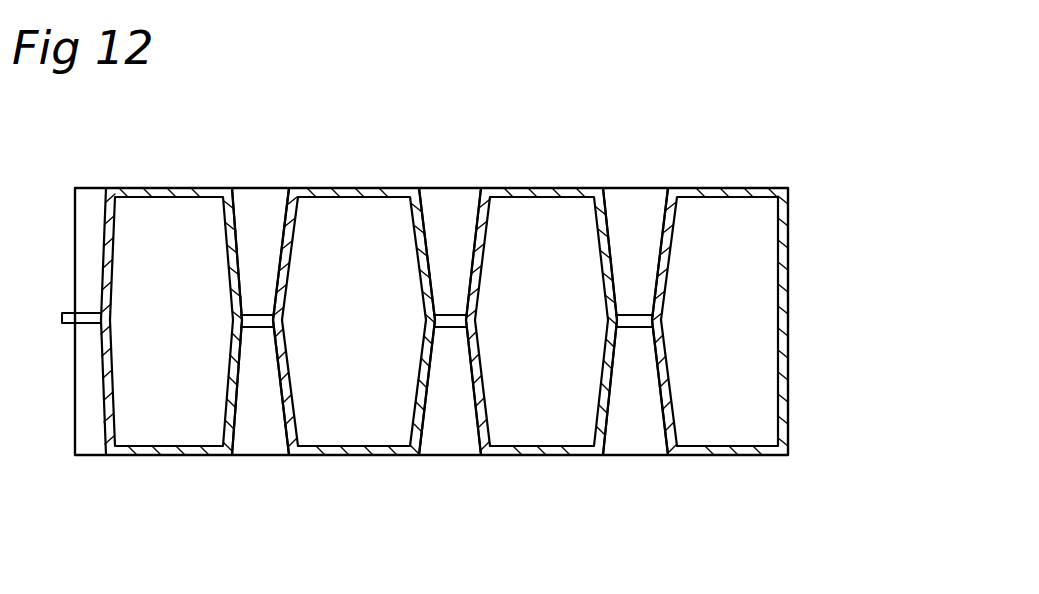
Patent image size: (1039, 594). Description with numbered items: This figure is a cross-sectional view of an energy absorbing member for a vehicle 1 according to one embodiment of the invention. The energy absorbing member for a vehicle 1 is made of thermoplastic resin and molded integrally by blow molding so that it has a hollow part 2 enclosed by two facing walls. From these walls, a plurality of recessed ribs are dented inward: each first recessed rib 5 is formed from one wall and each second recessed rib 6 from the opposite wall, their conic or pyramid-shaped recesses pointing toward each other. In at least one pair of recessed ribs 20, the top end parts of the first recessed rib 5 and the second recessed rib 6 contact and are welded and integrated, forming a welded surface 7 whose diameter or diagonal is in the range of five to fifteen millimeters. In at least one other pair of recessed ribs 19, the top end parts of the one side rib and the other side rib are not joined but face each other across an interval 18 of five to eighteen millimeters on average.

The energy absorbing member for a vehicle 1 is at (803, 282).
The hollow part 2 is at (723, 246).
The first recessed rib 5 is at (262, 223).
The second recessed rib 6 is at (258, 395).
The welded surface 7 is at (260, 310).
The interval 18 is at (486, 315).
The pair of recessed ribs having an interval 19 is at (391, 245).
The pair of recessed ribs having a welded surface 20 is at (689, 355).